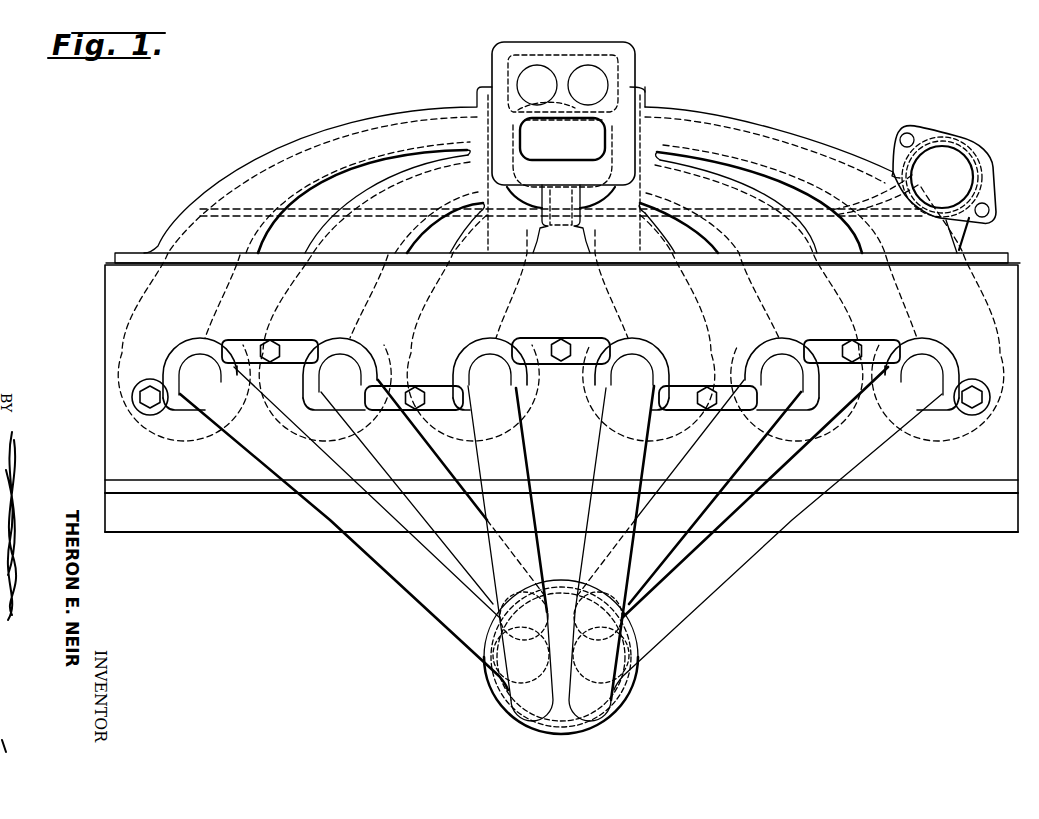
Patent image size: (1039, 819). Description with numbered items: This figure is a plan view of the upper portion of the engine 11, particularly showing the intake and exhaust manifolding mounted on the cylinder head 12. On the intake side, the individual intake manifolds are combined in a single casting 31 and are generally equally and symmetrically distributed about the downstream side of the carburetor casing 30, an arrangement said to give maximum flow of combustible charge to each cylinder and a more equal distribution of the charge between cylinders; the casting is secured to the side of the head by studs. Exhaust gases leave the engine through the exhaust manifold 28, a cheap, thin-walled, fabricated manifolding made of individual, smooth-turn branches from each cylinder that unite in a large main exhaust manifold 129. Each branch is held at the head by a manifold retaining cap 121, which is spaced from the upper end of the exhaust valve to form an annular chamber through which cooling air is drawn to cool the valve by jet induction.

The engine 11 is at (103, 329).
The cylinder head 12 is at (120, 443).
The exhaust manifold 28 is at (412, 578).
The carburetor casing 30 is at (627, 60).
The single casting 31 is at (183, 223).
The manifold retaining cap 121 is at (477, 343).
The main exhaust manifold 129 is at (618, 700).